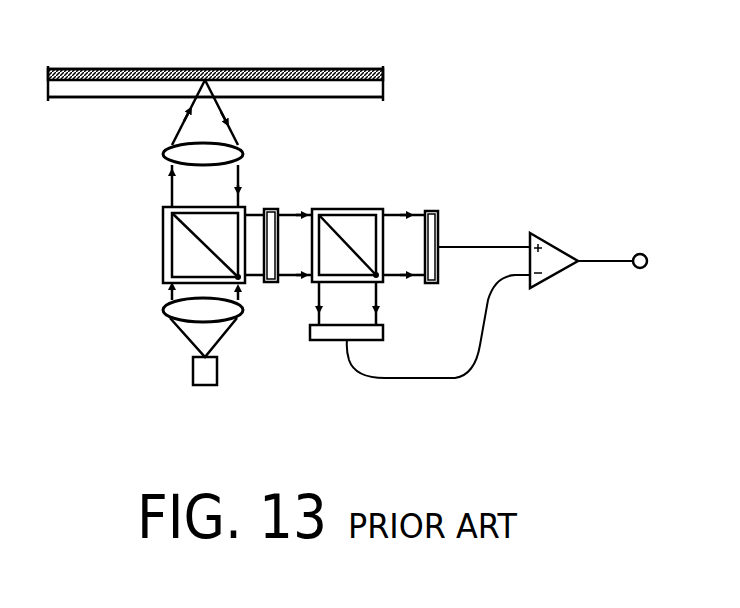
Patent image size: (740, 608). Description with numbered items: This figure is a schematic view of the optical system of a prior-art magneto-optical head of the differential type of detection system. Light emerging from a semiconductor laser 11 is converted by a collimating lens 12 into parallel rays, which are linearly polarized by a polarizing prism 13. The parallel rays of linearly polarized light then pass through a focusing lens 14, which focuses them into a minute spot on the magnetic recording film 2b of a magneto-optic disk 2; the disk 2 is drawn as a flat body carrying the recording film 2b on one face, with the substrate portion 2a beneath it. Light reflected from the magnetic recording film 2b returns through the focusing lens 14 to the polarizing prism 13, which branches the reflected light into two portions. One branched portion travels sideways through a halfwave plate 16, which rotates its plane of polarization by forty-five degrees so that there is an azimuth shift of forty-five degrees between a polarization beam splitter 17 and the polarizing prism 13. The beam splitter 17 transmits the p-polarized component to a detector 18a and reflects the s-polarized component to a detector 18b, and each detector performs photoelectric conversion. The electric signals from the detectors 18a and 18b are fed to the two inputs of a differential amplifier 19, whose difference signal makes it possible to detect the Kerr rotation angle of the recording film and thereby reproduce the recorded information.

The magneto-optic disk 2 is at (415, 67).
The disk substrate 2a is at (87, 90).
The magnetic recording film 2b is at (93, 71).
The semiconductor laser 11 is at (190, 372).
The collimating lens 12 is at (172, 313).
The polarizing prism 13 is at (163, 252).
The focusing lens 14 is at (170, 158).
The halfwave plate 16 is at (270, 208).
The polarization beam splitter 17 is at (370, 208).
The detector 18a is at (437, 213).
The detector 18b is at (318, 342).
The differential amplifier 19 is at (553, 278).